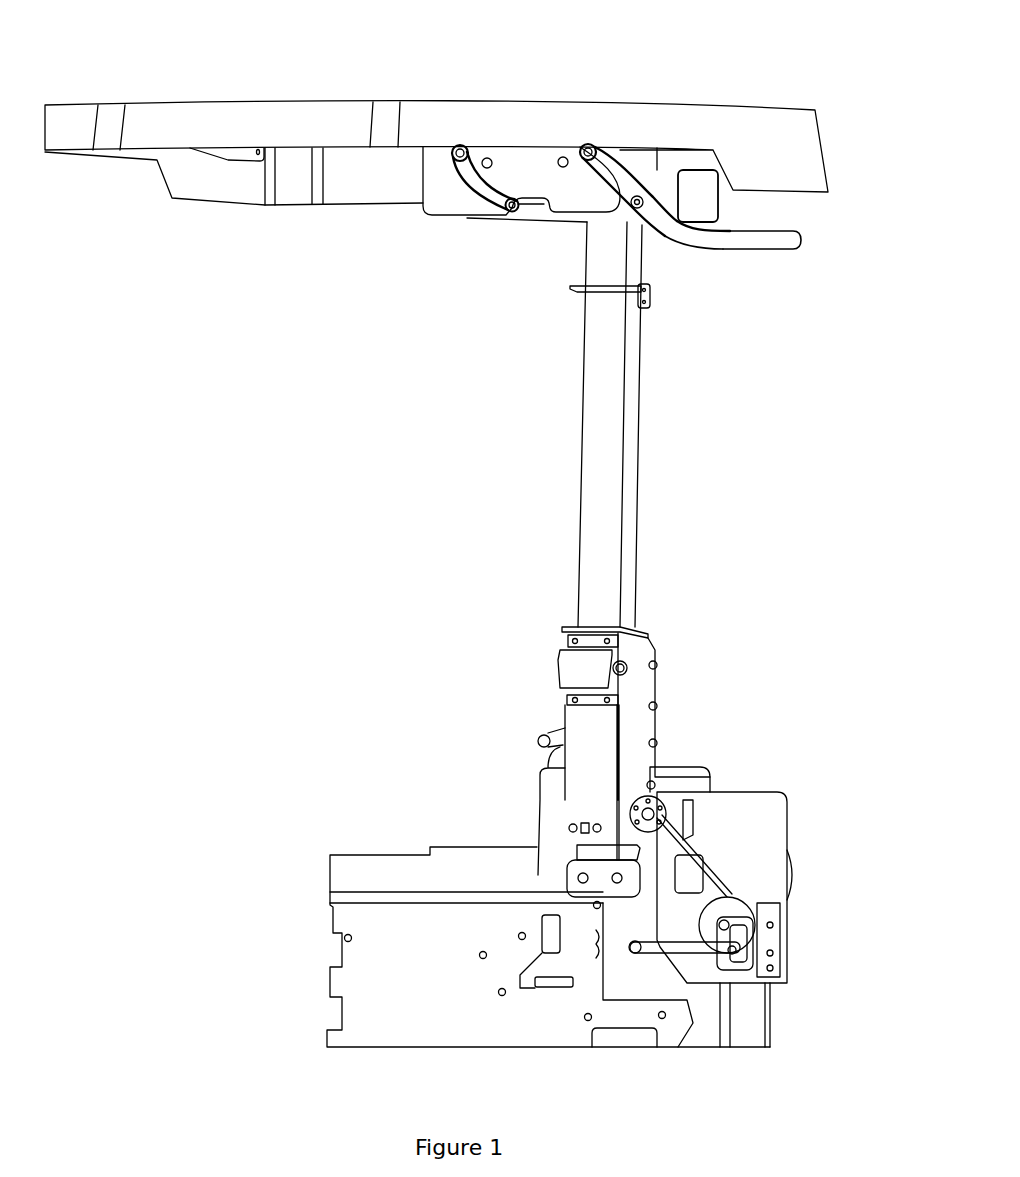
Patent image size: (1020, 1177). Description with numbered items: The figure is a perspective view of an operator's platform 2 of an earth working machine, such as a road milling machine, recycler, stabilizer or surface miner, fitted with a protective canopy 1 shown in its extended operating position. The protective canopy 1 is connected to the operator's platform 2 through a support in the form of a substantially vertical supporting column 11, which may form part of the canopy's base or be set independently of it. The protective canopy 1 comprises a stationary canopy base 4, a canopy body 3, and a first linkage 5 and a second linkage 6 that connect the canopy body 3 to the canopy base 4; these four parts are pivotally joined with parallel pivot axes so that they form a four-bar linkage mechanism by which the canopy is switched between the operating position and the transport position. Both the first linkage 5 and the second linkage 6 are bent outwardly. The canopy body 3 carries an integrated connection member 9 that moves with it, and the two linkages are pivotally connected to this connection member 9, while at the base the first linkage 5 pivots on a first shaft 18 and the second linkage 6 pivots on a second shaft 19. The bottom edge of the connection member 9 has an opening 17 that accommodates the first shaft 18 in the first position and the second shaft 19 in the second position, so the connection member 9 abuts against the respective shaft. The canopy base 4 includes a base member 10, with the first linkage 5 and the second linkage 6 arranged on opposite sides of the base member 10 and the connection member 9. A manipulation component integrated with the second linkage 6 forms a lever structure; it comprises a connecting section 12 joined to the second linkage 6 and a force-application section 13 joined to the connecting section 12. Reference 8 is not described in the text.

The protective canopy 1 is at (342, 203).
The operator's platform 2 is at (330, 877).
The canopy body 3 is at (195, 103).
The canopy base 4 is at (584, 224).
The first linkage 5 is at (476, 167).
The second linkage 6 is at (597, 146).
The arm joint 8 is at (663, 238).
The connection member 9 is at (537, 175).
The base member 10 is at (720, 195).
The supporting column 11 is at (612, 425).
The connecting section 12 is at (673, 229).
The force-application section 13 is at (785, 242).
The opening 17 is at (532, 200).
The first shaft 18 is at (506, 213).
The second shaft 19 is at (640, 200).